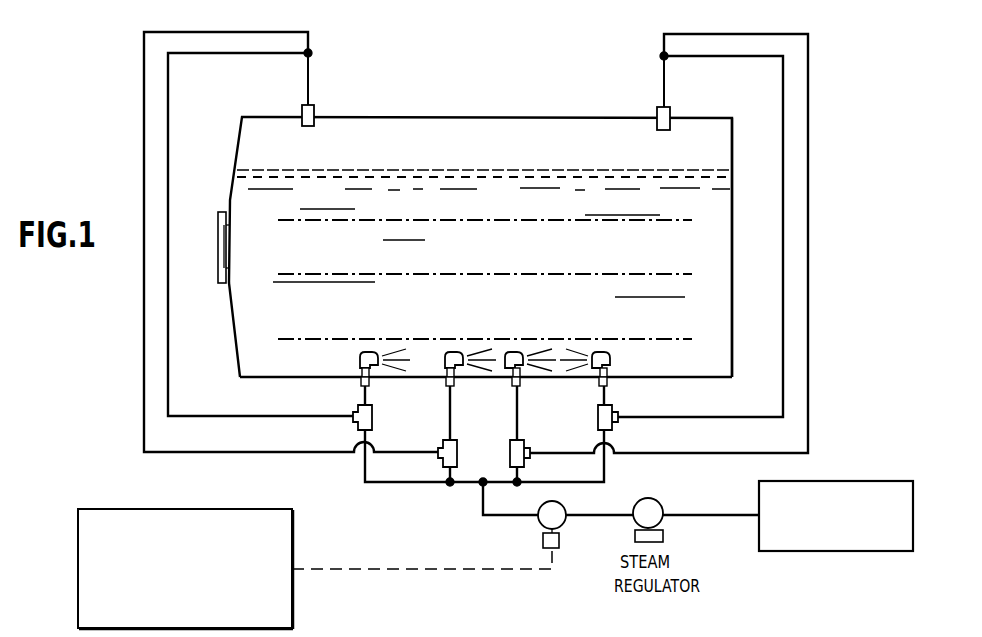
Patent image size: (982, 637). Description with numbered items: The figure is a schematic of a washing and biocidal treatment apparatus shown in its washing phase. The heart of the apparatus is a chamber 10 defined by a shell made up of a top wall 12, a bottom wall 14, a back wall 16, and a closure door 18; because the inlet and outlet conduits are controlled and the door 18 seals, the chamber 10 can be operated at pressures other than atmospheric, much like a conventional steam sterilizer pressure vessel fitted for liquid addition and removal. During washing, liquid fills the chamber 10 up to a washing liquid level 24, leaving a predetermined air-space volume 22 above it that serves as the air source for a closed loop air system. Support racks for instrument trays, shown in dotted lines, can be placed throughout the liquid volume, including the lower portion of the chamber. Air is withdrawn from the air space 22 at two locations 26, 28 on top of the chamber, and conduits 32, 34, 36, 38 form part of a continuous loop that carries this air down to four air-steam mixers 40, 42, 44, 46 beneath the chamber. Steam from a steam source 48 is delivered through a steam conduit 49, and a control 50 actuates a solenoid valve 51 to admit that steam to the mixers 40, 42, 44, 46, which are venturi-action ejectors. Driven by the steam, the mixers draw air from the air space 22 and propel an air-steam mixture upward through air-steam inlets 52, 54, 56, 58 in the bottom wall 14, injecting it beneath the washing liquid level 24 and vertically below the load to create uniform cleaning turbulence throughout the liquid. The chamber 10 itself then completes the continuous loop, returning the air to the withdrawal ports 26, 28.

The chamber 10 is at (472, 256).
The top wall 12 is at (462, 118).
The bottom wall 14 is at (659, 379).
The back wall 16 is at (732, 305).
The closure door 18 is at (232, 313).
The air-space volume 22 is at (470, 156).
The washing liquid level 24 is at (542, 168).
The air withdrawal port 26 is at (300, 128).
The air withdrawal port 28 is at (671, 130).
The conduit 32 is at (240, 31).
The conduit 34 is at (242, 57).
The conduit 36 is at (700, 33).
The conduit 38 is at (703, 61).
The air-steam mixer 40 is at (354, 424).
The air-steam mixer 42 is at (442, 446).
The air-steam mixer 44 is at (528, 444).
The air-steam mixer 46 is at (614, 425).
The steam source 48 is at (870, 481).
The steam conduit 49 is at (695, 516).
The control 50 is at (78, 608).
The solenoid valve 51 is at (560, 507).
The air-steam inlet 52 is at (366, 352).
The air-steam inlet 54 is at (450, 352).
The air-steam inlet 56 is at (517, 352).
The air-steam inlet 58 is at (604, 352).